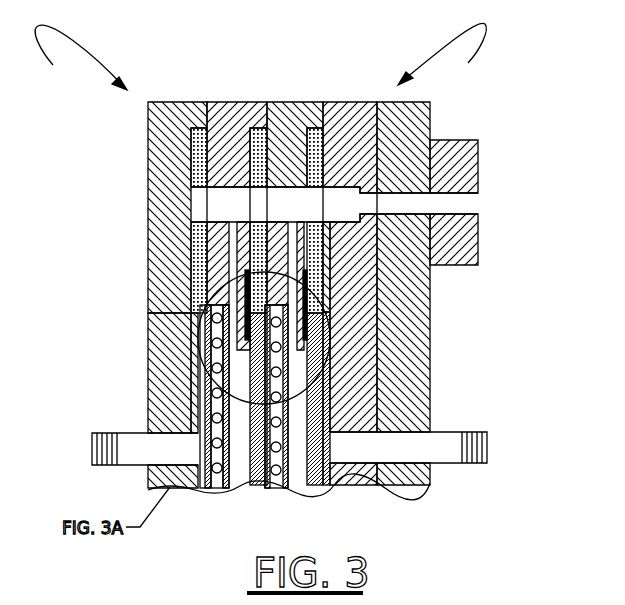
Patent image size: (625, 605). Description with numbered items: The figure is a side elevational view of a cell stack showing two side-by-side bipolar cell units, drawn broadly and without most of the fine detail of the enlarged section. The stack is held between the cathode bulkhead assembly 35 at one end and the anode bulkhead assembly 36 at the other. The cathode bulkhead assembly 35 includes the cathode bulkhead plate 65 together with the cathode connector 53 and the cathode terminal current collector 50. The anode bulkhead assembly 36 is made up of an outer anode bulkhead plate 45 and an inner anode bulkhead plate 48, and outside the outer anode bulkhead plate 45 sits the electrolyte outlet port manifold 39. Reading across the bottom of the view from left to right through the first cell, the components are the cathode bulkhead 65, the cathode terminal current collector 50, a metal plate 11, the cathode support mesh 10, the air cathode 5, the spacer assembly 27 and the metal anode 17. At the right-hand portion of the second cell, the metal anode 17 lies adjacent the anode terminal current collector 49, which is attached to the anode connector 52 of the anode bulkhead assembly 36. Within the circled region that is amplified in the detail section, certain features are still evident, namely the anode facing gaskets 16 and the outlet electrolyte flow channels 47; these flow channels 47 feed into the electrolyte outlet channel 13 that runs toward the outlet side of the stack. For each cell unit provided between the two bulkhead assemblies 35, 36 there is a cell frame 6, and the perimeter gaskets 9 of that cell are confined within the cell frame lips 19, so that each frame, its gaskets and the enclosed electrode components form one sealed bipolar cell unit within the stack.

The air cathode 5 is at (245, 460).
The cell frame 6 is at (218, 110).
The perimeter gaskets 9 is at (190, 152).
The cathode support mesh 10 is at (212, 485).
The metal plate 11 is at (202, 485).
The electrolyte outlet channel 13 is at (198, 217).
The anode facing gaskets 16 is at (243, 292).
The metal anode 17 is at (325, 478).
The cell frame lips 19 is at (195, 127).
The spacer assembly 27 is at (258, 478).
The cathode bulkhead assembly 35 is at (81, 59).
The anode bulkhead assembly 36 is at (442, 56).
The electrolyte outlet port manifold 39 is at (481, 139).
The outer anode bulkhead plate 45 is at (415, 335).
The outlet electrolyte flow channels 47 is at (240, 274).
The inner anode bulkhead plate 48 is at (360, 478).
The anode terminal current collector 49 is at (330, 412).
The cathode terminal current collector 50 is at (196, 387).
The anode connector 52 is at (445, 450).
The cathode connector 53 is at (135, 450).
The cathode bulkhead plate 65 is at (178, 314).